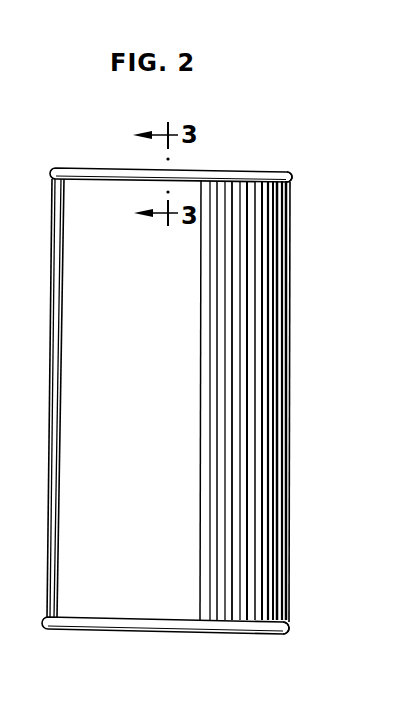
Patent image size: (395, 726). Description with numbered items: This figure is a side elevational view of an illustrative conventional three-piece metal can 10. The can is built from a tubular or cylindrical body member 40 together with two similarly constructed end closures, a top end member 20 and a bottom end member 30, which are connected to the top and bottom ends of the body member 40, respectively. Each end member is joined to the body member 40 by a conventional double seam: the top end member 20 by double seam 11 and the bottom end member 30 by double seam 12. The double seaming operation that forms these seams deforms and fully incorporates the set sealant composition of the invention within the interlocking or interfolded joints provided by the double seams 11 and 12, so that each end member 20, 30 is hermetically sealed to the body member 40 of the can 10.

The 3-piece metal can 10 is at (170, 350).
The double seam 11 is at (295, 178).
The double seam 12 is at (289, 626).
The top end member 20 is at (264, 165).
The bottom end member 30 is at (176, 637).
The body member 40 is at (277, 423).